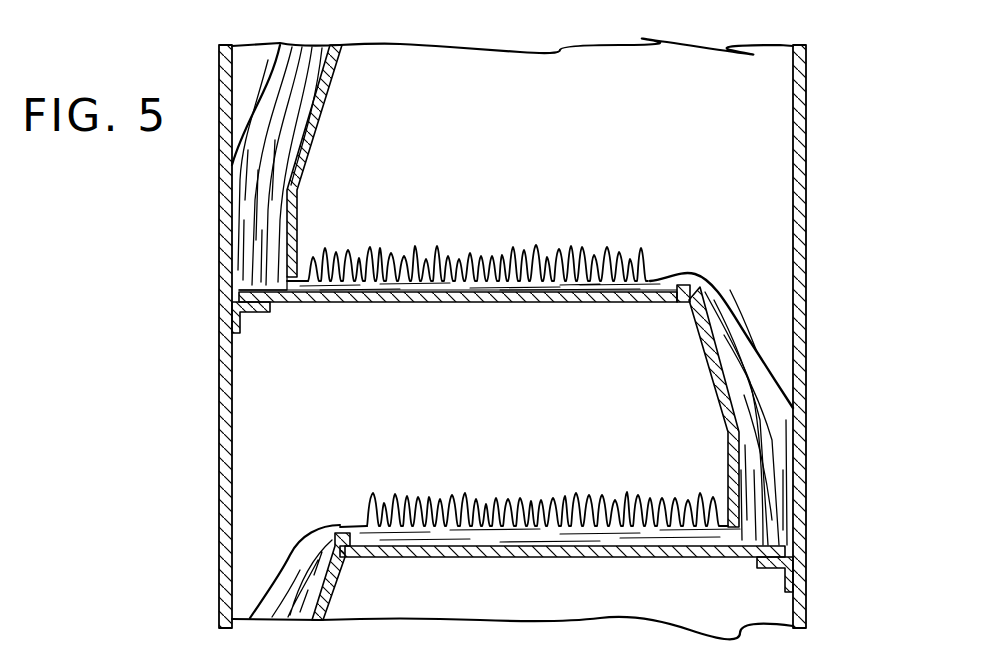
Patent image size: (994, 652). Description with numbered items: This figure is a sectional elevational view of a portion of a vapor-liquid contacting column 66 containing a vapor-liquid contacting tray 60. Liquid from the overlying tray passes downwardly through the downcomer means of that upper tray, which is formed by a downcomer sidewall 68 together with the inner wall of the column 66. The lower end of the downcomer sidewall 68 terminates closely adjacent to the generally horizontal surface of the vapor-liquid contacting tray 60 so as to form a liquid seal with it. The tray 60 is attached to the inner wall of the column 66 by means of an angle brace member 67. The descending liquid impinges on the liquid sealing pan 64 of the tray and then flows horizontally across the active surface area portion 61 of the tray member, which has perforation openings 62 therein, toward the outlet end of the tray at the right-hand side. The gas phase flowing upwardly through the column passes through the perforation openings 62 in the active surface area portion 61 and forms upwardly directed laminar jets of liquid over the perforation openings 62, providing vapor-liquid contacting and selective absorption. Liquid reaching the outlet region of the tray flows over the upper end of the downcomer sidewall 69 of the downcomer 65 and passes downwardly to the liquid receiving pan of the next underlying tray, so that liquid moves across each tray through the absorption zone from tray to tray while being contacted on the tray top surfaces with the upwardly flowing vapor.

The vapor-liquid contacting tray 60 is at (304, 305).
The active surface area portion 61 is at (510, 303).
The perforation opening 62 is at (440, 303).
The liquid sealing pan 64 is at (250, 290).
The downcomer 65 is at (776, 355).
The vapor-liquid contacting column 66 is at (806, 480).
The angle brace member 67 is at (240, 312).
The downcomer sidewall 68 is at (312, 143).
The downcomer sidewall 69 is at (714, 392).